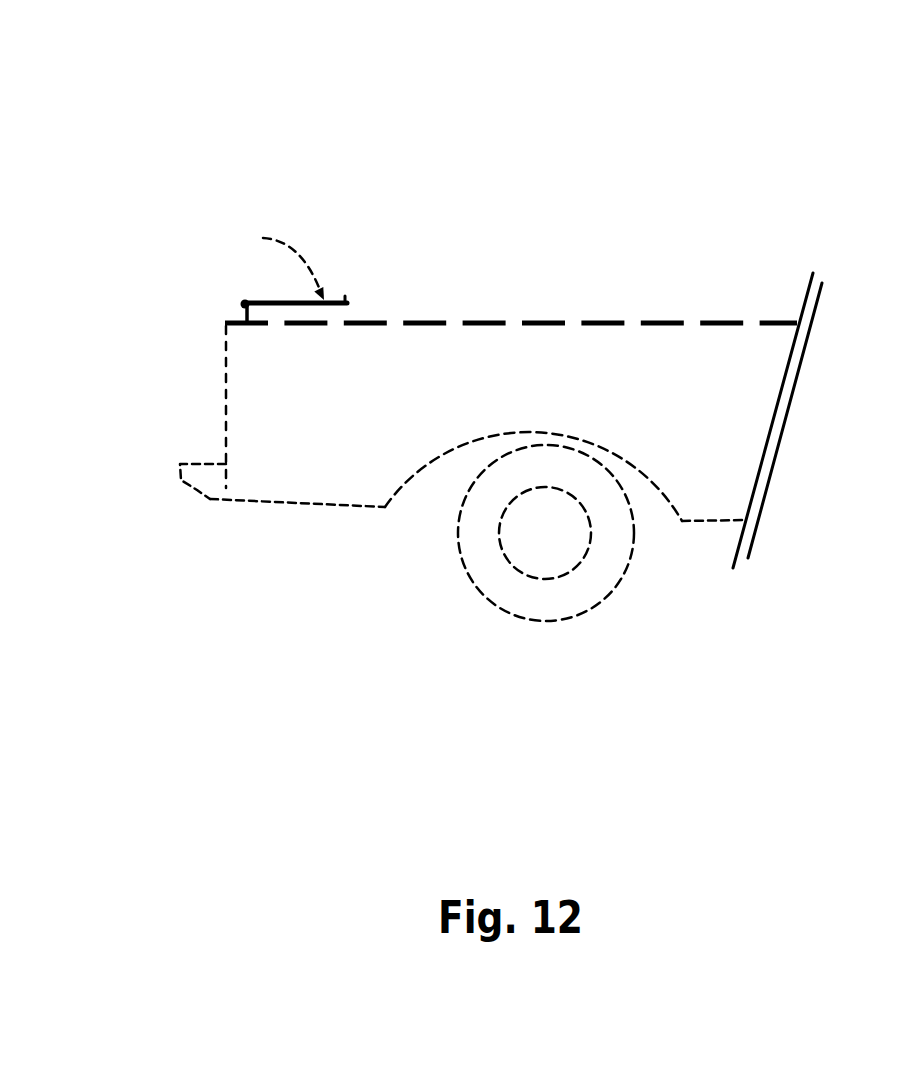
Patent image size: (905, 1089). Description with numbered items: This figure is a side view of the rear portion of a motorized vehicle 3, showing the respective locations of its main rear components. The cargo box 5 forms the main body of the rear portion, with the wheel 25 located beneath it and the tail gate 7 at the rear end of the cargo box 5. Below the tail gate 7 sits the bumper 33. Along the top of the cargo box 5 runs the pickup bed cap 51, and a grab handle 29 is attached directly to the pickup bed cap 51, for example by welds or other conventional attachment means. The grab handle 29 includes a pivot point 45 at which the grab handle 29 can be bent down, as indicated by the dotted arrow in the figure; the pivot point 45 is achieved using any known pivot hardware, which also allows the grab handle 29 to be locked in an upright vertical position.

The vehicle 3 is at (438, 115).
The cargo box 5 is at (701, 413).
The tail gate 7 is at (227, 373).
The wheel 25 is at (477, 545).
The grab handle 29 is at (345, 301).
The bumper 33 is at (206, 485).
The pivot point 45 is at (243, 303).
The pickup bed cap 51 is at (545, 321).